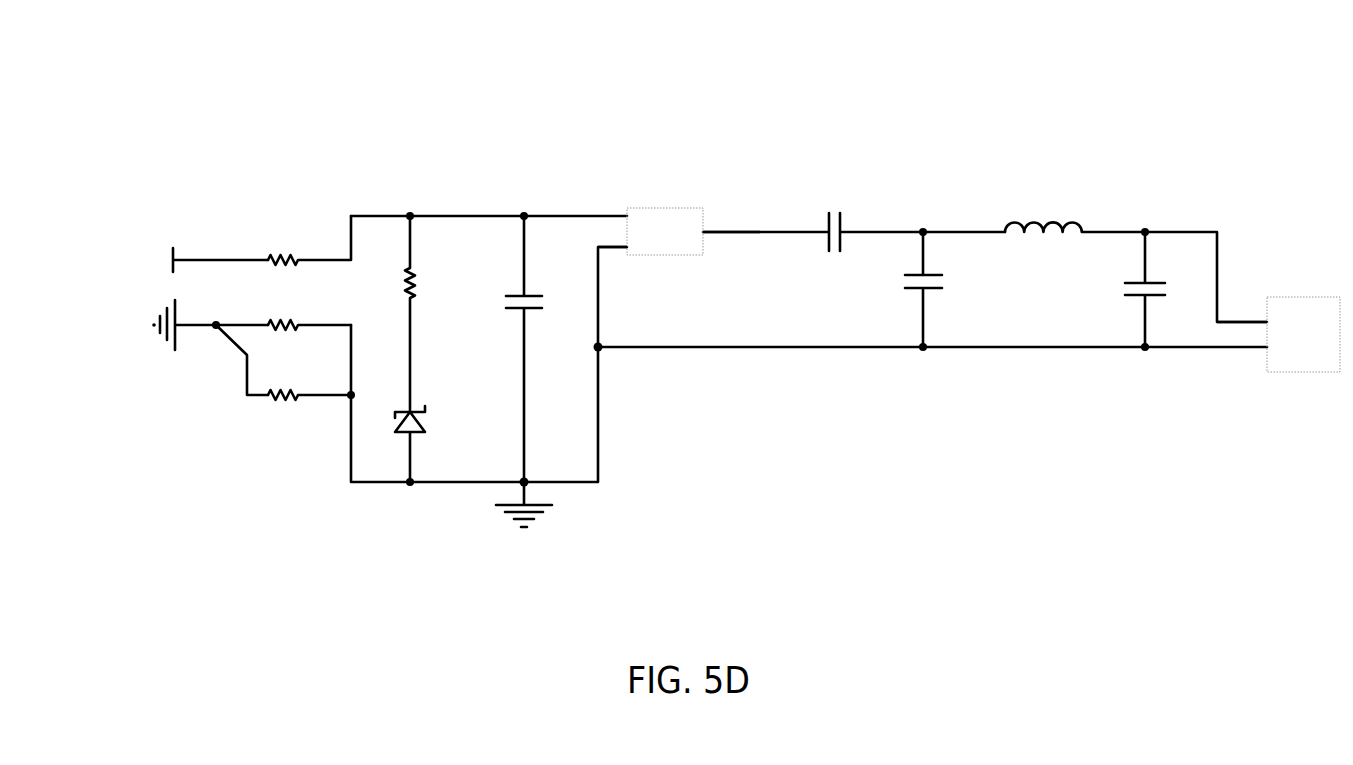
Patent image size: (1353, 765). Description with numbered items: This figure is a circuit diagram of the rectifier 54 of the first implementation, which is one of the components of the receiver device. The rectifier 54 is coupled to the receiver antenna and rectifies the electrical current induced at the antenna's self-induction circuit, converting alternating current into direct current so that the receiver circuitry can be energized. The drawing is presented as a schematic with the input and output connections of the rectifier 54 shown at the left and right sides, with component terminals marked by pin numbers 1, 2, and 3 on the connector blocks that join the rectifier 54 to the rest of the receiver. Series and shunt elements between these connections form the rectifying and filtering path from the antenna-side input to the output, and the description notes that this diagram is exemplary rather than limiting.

The rectifier 54 is at (1130, 80).
The connector pin 1 is at (946, 285).
The connector pin 2 is at (983, 289).
The connector pin 3 is at (718, 234).